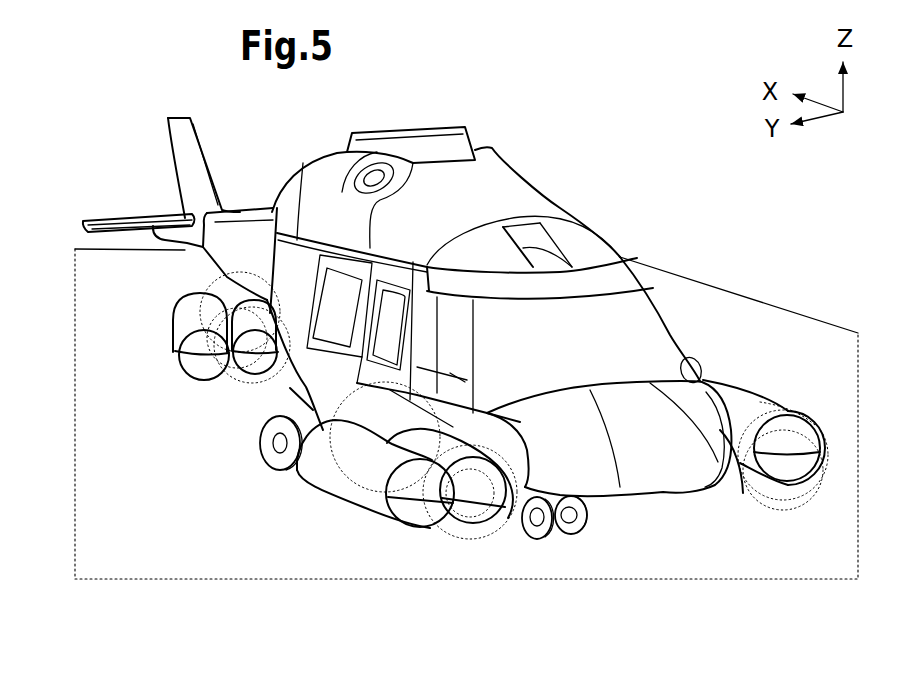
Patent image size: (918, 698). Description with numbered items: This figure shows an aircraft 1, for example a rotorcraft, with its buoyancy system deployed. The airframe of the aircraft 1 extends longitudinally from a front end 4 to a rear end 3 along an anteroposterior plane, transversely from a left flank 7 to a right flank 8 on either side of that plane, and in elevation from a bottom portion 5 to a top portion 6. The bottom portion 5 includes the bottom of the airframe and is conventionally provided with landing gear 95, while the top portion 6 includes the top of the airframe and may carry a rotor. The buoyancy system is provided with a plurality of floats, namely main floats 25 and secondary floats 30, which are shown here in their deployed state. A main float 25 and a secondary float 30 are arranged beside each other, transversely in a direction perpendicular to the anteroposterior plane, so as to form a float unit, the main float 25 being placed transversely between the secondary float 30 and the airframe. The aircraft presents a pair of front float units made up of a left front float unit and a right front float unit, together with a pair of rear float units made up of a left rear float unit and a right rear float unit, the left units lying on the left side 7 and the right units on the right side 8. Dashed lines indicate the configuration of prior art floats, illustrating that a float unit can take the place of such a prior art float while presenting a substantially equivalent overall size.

The aircraft 1 is at (586, 150).
The rear end 3 is at (150, 212).
The front end 4 is at (665, 477).
The bottom portion 5 is at (605, 497).
The top portion 6 is at (492, 193).
The left flank 7 is at (600, 228).
The right flank 8 is at (340, 316).
The main float 25 is at (250, 365).
The secondary float 30 is at (181, 350).
The landing gear 95 is at (558, 548).